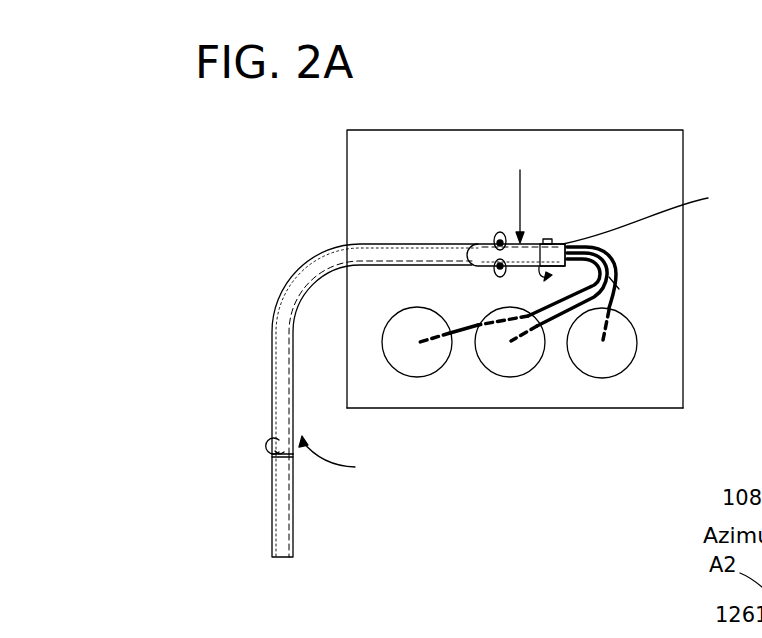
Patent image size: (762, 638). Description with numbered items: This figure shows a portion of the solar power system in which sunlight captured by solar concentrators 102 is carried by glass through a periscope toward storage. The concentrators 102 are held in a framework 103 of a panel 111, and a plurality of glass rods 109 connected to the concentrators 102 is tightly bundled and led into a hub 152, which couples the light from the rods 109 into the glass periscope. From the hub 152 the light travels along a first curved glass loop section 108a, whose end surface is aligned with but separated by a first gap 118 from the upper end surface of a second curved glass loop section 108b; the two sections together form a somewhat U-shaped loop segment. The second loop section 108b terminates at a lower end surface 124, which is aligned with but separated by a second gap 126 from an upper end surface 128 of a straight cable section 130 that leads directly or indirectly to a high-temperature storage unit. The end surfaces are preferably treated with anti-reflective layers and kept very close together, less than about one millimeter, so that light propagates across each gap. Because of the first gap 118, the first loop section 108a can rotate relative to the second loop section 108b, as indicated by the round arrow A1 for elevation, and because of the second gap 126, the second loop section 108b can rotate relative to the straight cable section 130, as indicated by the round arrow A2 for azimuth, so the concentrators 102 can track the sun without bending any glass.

The solar concentrator 102 is at (577, 372).
The framework 103 is at (647, 145).
The first curved glass loop section 108a is at (519, 268).
The second curved glass loop section 108b is at (277, 318).
The rods 109 is at (616, 279).
The panel 111 is at (623, 410).
The first gap 118 is at (480, 241).
The end surface 124 is at (286, 455).
The second gap 126 is at (283, 458).
The upper end surface 128 is at (280, 457).
The straight cable section 130 is at (295, 502).
The hub 152 is at (568, 245).
The round arrow A1 is at (651, 210).
The round arrow A2 is at (276, 446).